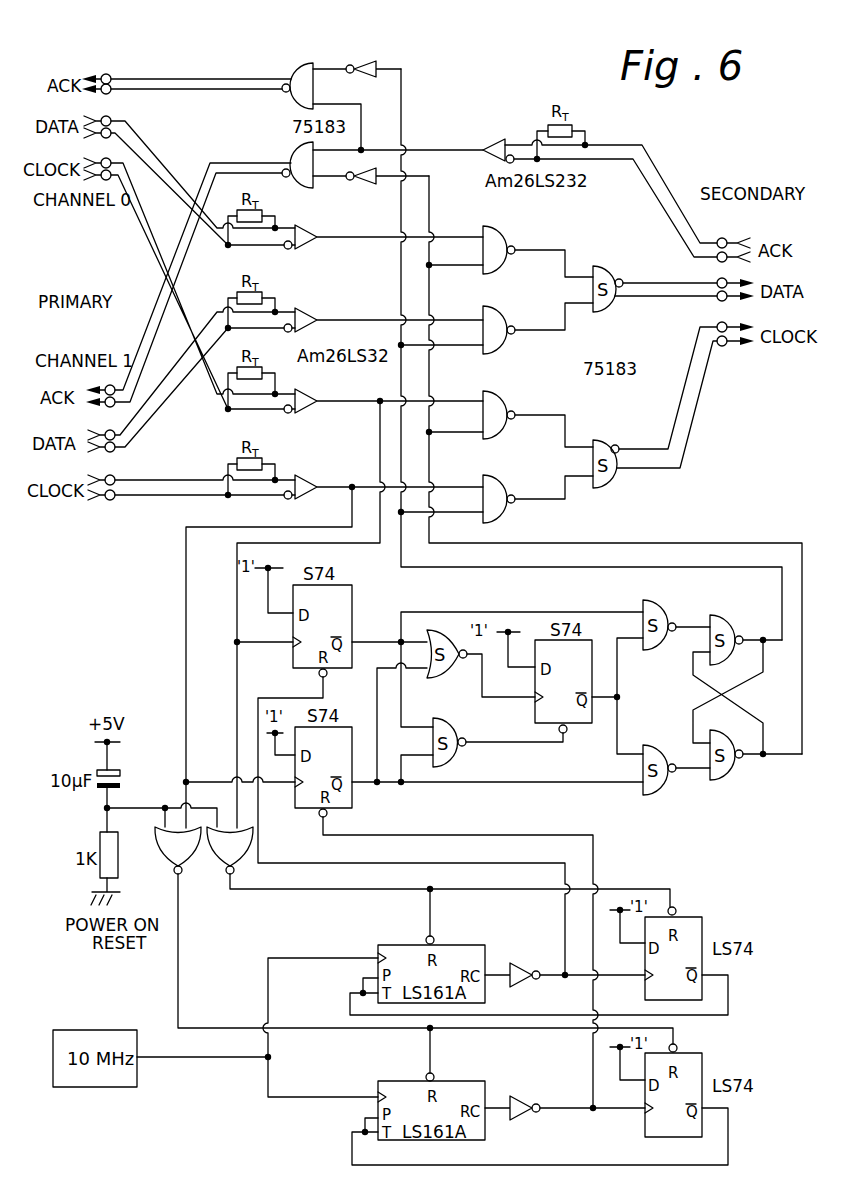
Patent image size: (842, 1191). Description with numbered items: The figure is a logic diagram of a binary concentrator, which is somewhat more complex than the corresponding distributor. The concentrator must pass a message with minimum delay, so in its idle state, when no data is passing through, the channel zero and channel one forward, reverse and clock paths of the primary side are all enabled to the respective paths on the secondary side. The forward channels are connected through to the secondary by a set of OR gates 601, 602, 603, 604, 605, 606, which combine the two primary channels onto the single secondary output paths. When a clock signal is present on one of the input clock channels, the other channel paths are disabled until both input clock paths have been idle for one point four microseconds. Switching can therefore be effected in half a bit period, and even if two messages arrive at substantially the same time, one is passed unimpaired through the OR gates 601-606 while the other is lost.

The OR gate 601 is at (503, 237).
The OR gate 602 is at (503, 311).
The OR gate 603 is at (502, 401).
The OR gate 604 is at (507, 483).
The OR gate 605 is at (318, 62).
The OR gate 606 is at (313, 189).